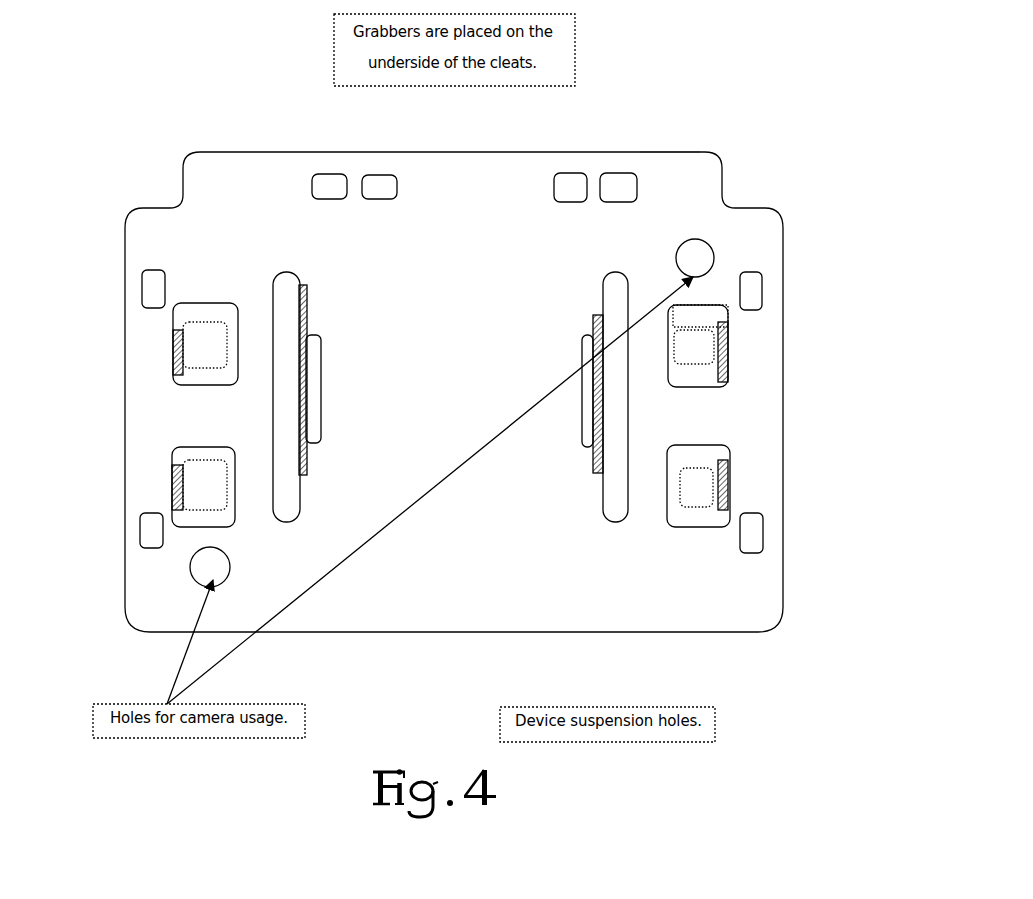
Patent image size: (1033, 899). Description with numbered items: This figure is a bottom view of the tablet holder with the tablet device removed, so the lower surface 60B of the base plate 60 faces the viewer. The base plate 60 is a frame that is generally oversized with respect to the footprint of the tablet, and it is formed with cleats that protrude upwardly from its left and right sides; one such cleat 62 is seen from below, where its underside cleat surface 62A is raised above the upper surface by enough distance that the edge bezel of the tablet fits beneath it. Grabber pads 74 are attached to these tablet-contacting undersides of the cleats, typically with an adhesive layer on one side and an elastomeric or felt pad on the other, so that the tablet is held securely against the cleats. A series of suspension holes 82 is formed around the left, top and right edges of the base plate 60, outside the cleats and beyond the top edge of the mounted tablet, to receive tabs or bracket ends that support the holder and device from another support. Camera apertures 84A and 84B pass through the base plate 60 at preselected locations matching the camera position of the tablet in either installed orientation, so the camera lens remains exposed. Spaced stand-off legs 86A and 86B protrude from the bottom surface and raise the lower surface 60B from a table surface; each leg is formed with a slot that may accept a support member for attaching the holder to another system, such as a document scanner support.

The base plate 60 is at (222, 147).
The lower surface 60B is at (660, 205).
The cleat 62 is at (695, 372).
The underside cleat surface 62A is at (700, 316).
The grabber pads 74 is at (212, 488).
The suspension holes 82 is at (155, 300).
The camera aperture 84A is at (700, 243).
The camera aperture 84B is at (183, 573).
The stand-off leg 86A is at (308, 408).
The stand-off leg 86B is at (590, 393).